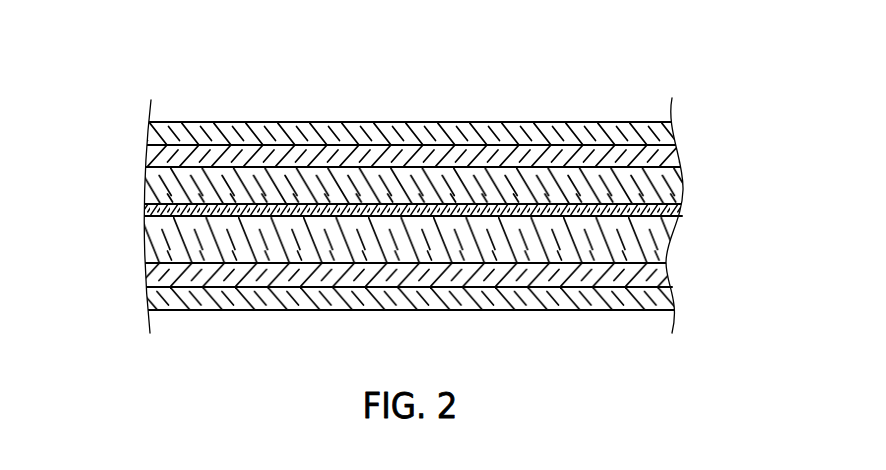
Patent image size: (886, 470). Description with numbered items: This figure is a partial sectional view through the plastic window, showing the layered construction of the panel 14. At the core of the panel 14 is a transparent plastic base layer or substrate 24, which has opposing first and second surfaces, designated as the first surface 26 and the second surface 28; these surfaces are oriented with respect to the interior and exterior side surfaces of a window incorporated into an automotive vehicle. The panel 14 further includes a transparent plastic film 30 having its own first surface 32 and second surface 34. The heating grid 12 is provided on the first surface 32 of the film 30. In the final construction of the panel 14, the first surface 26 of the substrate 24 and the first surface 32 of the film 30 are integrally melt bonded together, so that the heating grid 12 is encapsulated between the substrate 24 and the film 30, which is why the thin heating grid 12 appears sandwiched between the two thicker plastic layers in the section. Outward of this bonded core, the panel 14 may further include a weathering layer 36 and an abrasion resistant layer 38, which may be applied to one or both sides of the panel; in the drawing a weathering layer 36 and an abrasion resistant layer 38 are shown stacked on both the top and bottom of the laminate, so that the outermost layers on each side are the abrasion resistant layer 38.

The panel 14 is at (122, 68).
The heating grid 12 is at (158, 210).
The transparent plastic base layer or substrate 24 is at (160, 240).
The first surface of the substrate 26 is at (642, 203).
The second surface of the substrate 28 is at (670, 287).
The transparent plastic film 30 is at (160, 186).
The first surface of the film 32 is at (673, 223).
The second surface of the film 34 is at (663, 158).
The weathering layer 36 is at (162, 158).
The abrasion resistant layer 38 is at (162, 133).